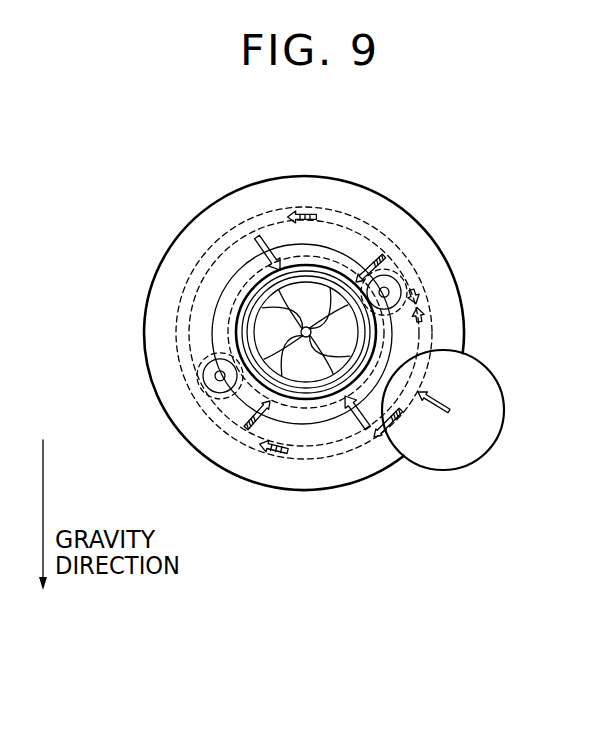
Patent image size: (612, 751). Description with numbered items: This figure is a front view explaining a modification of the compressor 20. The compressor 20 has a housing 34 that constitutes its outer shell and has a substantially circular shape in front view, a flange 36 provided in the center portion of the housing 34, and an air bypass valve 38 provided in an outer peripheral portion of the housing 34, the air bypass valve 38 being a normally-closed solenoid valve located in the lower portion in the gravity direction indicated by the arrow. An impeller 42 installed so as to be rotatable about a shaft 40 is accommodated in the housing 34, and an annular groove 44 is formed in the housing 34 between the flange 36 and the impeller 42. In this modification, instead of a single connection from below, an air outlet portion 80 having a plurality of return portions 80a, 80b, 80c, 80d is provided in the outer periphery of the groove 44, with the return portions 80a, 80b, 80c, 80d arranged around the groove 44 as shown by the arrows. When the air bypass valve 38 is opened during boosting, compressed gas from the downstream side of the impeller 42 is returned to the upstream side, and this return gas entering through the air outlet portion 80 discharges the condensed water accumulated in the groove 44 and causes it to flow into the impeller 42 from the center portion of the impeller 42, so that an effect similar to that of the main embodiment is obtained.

The compressor 20 is at (462, 516).
The housing 34 is at (420, 230).
The flange 36 is at (356, 262).
The air bypass valve (ABV) 38 is at (497, 440).
The shaft 40 is at (309, 328).
The impeller 42 is at (343, 326).
The annular groove 44 is at (309, 338).
The air outlet portion 80 is at (260, 447).
The return portion 80a is at (237, 420).
The return portion 80b is at (256, 262).
The return portion 80c is at (371, 253).
The return portion 80d is at (350, 426).